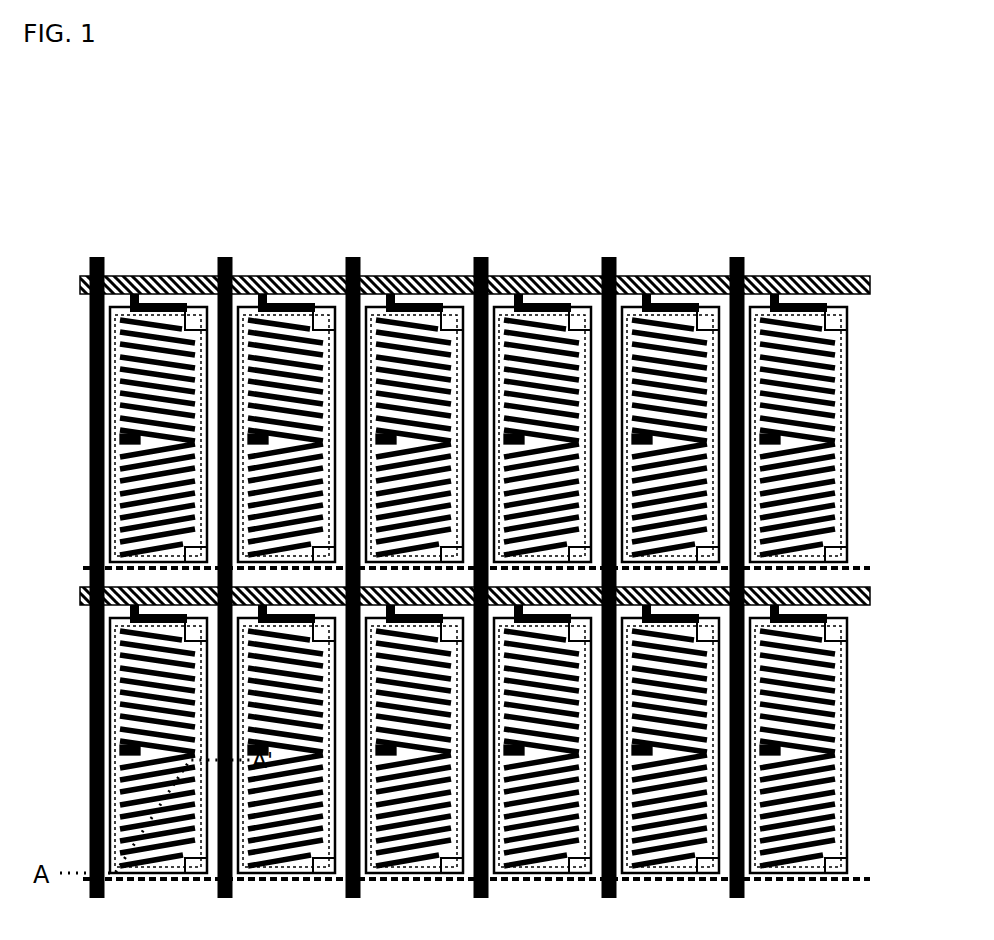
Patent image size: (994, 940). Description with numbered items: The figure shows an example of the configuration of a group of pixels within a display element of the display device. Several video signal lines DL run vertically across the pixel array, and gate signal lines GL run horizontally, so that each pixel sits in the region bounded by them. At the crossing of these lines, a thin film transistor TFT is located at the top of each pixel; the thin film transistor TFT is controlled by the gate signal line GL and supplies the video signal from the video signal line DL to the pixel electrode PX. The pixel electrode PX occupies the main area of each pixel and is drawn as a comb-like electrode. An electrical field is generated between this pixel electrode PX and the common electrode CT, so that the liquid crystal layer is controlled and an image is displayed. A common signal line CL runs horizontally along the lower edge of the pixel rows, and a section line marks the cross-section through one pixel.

The video signal line DL is at (102, 276).
The thin film transistor TFT is at (147, 278).
The pixel electrode PX is at (565, 302).
The gate signal line GL is at (864, 294).
The common electrode CT is at (853, 565).
The common signal line CL is at (862, 877).